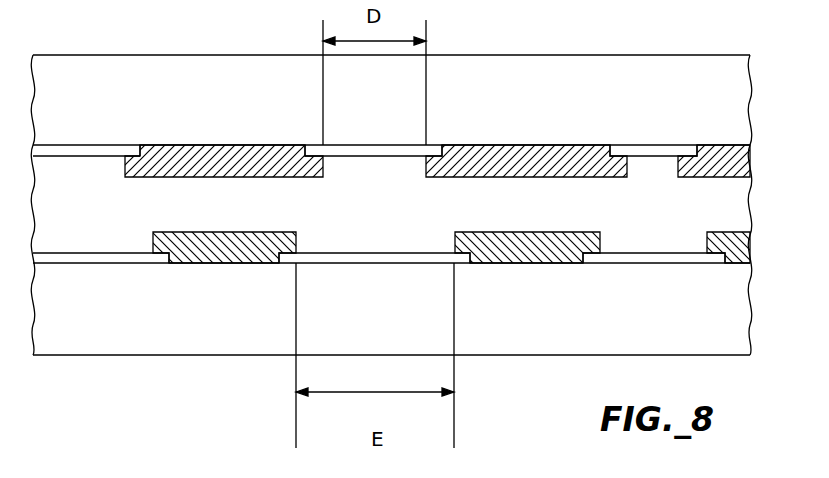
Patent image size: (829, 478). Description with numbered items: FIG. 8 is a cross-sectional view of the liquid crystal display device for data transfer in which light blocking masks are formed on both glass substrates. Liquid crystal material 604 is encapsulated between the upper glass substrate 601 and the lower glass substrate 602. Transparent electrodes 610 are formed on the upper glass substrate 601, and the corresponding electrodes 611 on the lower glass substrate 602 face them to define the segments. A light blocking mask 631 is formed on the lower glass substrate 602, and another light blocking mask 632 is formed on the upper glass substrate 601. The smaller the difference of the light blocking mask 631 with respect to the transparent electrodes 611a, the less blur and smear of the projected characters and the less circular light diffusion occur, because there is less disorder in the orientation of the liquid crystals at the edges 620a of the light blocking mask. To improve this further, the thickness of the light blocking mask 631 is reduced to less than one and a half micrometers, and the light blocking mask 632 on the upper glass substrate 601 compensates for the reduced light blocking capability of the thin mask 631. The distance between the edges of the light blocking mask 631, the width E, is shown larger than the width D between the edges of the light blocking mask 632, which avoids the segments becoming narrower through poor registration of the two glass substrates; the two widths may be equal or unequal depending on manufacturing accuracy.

The upper glass substrate 601 is at (141, 82).
The lower glass substrate 602 is at (116, 335).
The liquid crystal material 604 is at (592, 190).
The transparent electrodes 610 is at (675, 150).
The electrodes 611 is at (660, 262).
The transparent electrodes 611a is at (405, 252).
The edges of the light blocking mask 620a is at (298, 232).
The light blocking mask 631 is at (560, 256).
The light blocking mask 632 is at (517, 158).